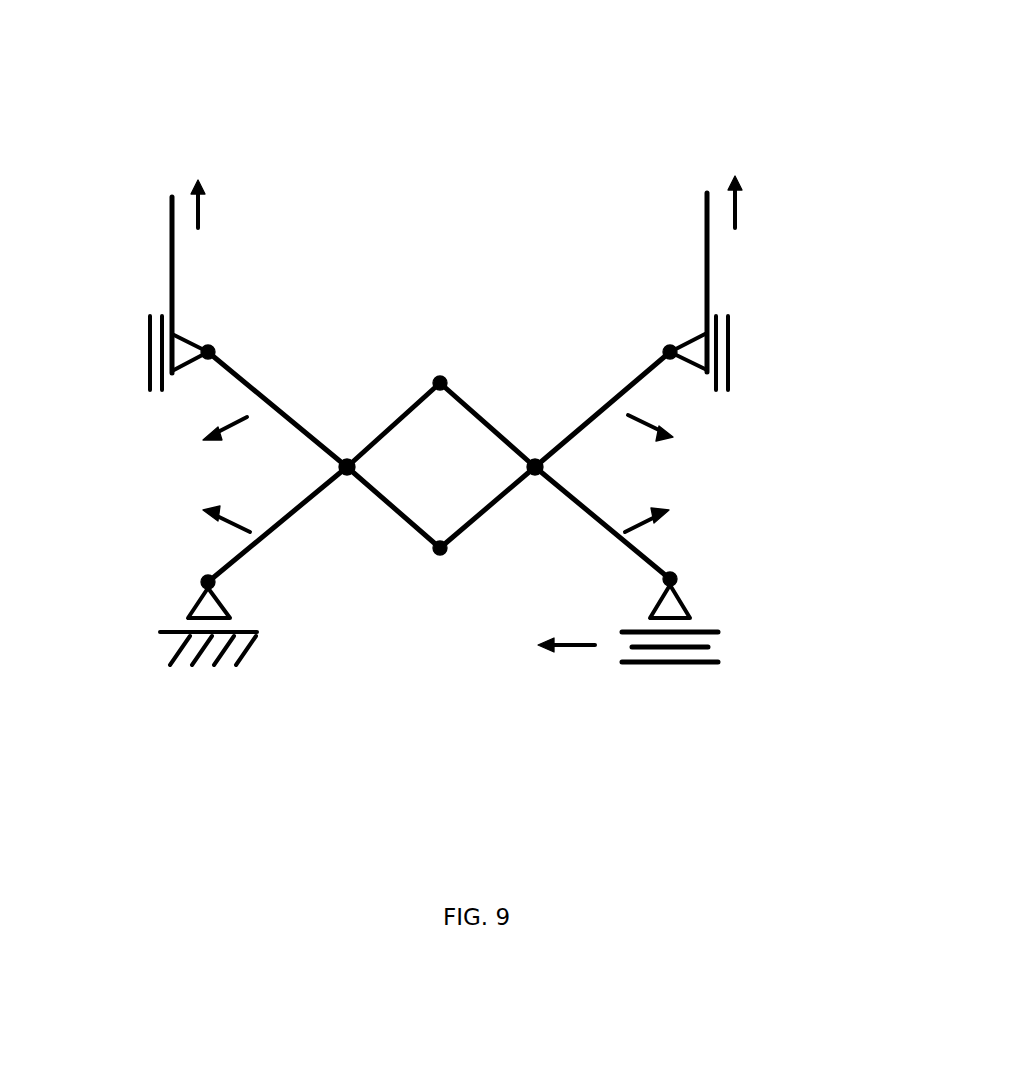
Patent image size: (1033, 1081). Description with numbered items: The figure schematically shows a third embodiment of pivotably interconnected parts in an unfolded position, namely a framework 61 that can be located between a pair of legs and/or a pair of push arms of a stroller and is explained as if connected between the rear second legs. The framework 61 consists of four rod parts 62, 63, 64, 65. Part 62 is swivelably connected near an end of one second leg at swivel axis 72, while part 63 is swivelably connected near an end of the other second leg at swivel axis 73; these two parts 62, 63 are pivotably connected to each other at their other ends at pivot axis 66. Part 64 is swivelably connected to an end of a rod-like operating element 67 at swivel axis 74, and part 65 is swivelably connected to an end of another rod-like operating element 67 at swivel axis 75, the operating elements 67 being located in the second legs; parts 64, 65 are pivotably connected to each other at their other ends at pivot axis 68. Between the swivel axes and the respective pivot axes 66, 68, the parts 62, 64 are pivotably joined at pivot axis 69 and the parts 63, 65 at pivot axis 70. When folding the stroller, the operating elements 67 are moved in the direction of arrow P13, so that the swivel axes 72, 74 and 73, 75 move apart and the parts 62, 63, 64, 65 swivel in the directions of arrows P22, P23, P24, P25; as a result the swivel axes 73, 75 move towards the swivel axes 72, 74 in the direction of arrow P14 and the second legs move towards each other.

The framework 61 is at (623, 153).
The part 62 is at (277, 528).
The part 63 is at (585, 510).
The part 64 is at (295, 422).
The part 65 is at (602, 402).
The pivot axis 66 is at (437, 378).
The rod-like operating element 67 is at (172, 238).
The pivot axis 68 is at (440, 553).
The pivot axis 69 is at (346, 474).
The pivot axis 70 is at (535, 460).
The swivel axis 72 is at (214, 583).
The swivel axis 73 is at (675, 576).
The swivel axis 74 is at (211, 349).
The swivel axis 75 is at (666, 349).
The arrow P13 is at (198, 208).
The arrow P14 is at (573, 648).
The arrow P22 is at (239, 523).
The arrow P23 is at (638, 517).
The arrow P24 is at (233, 428).
The arrow P25 is at (637, 427).